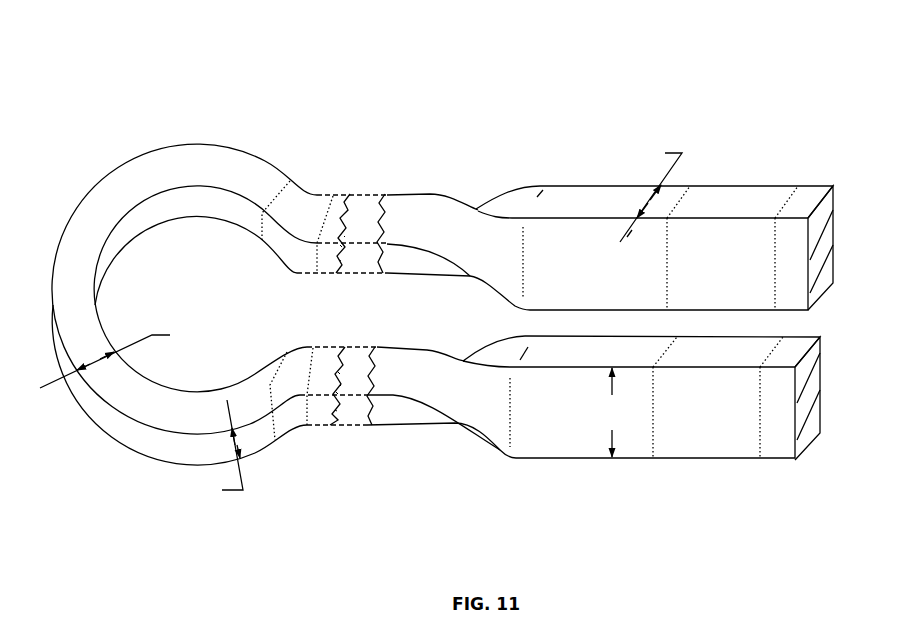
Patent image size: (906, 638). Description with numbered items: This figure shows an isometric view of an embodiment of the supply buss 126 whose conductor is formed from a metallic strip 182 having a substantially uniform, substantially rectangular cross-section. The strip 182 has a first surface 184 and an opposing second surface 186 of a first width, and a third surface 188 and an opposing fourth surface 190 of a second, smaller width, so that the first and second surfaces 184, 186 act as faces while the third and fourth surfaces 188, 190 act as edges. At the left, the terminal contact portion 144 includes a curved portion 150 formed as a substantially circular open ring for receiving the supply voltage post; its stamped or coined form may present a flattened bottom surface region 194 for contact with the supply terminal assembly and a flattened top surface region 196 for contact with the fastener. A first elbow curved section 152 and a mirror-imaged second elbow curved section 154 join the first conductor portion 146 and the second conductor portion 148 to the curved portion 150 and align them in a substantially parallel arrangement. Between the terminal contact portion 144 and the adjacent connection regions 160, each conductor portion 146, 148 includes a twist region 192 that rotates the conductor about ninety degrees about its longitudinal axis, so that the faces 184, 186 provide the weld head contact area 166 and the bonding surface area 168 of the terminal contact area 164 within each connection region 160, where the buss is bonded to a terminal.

The supply buss 126 is at (458, 53).
The metallic strip 182 is at (513, 165).
The terminal contact portion 144 is at (202, 140).
The top surface region 196 is at (125, 185).
The second elbow curved section 154 is at (307, 210).
The second conductor portion 148 is at (350, 187).
The connection region 160 is at (723, 183).
The terminal contact area 164 is at (740, 353).
The second surface 186 is at (840, 235).
The twist region 192 is at (467, 285).
The bottom surface region 194 is at (182, 225).
The curved portion 150 is at (262, 297).
The first elbow curved section 152 is at (295, 415).
The first conductor portion 146 is at (317, 428).
The first surface 184 is at (187, 172).
The third surface 188 is at (172, 215).
The fourth surface 190 is at (174, 457).
The bonding surface area 168 is at (692, 275).
The weld head contact area 166 is at (684, 428).